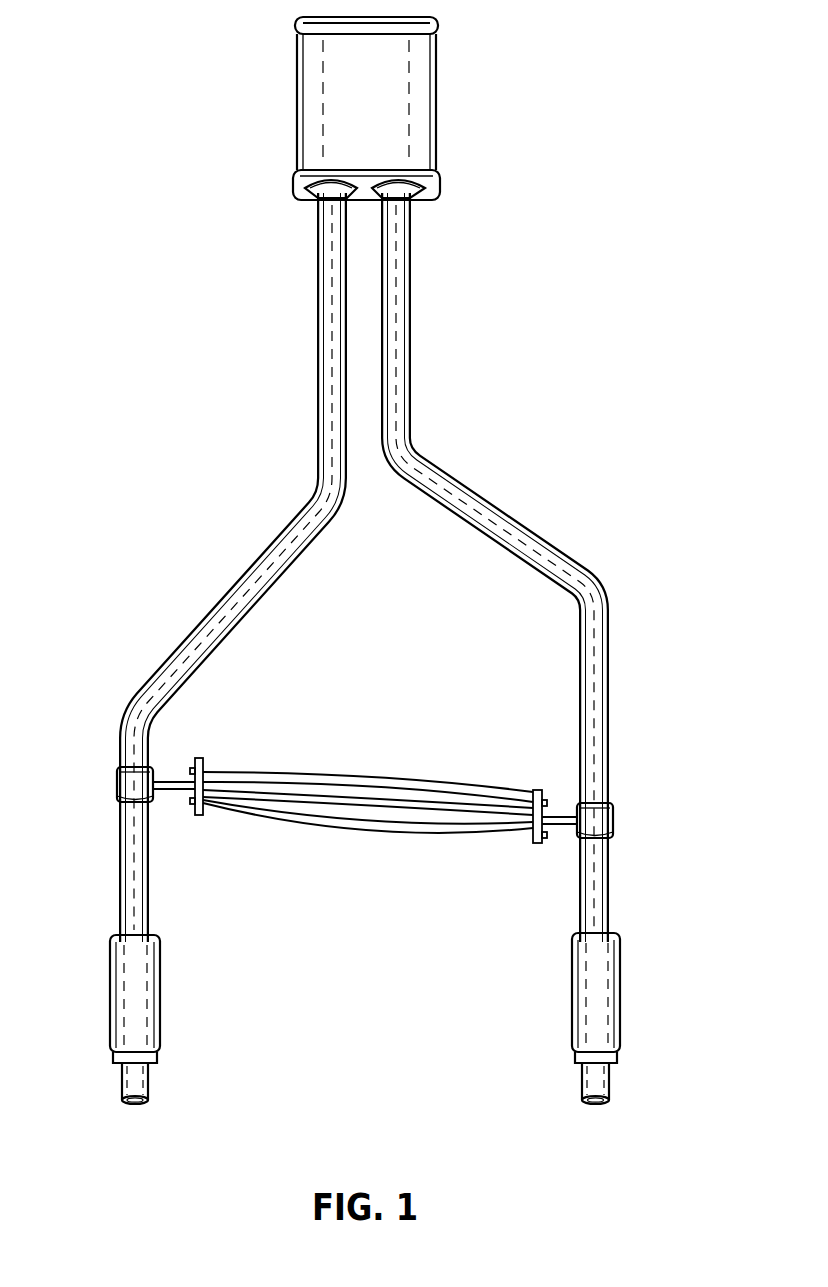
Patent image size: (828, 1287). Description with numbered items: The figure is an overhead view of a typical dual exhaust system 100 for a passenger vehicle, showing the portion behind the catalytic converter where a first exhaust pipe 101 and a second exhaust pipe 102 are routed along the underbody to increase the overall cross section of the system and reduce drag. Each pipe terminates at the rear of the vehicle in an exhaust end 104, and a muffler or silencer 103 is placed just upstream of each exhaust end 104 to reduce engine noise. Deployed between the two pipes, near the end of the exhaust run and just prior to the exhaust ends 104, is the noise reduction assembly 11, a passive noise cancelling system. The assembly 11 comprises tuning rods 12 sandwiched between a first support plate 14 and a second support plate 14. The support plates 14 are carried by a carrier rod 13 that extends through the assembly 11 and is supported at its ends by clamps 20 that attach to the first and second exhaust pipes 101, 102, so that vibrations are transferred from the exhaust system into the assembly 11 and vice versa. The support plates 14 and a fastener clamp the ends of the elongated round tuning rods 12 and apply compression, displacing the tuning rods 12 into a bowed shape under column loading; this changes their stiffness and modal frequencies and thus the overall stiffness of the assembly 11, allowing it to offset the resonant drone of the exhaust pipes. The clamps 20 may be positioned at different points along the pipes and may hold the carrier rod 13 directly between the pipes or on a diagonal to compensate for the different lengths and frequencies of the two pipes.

The tubing assembly 100 is at (373, 602).
The first exhaust pipe 101 is at (502, 511).
The second exhaust pipe 102 is at (244, 586).
The muffler or silencer 103 is at (111, 1004).
The exhaust end 104 is at (134, 1105).
The noise reduction assembly 11 is at (368, 779).
The tuning rod 12 is at (280, 771).
The carrier rod 13 is at (372, 814).
The support plate 14 is at (200, 759).
The clamp 20 is at (117, 786).